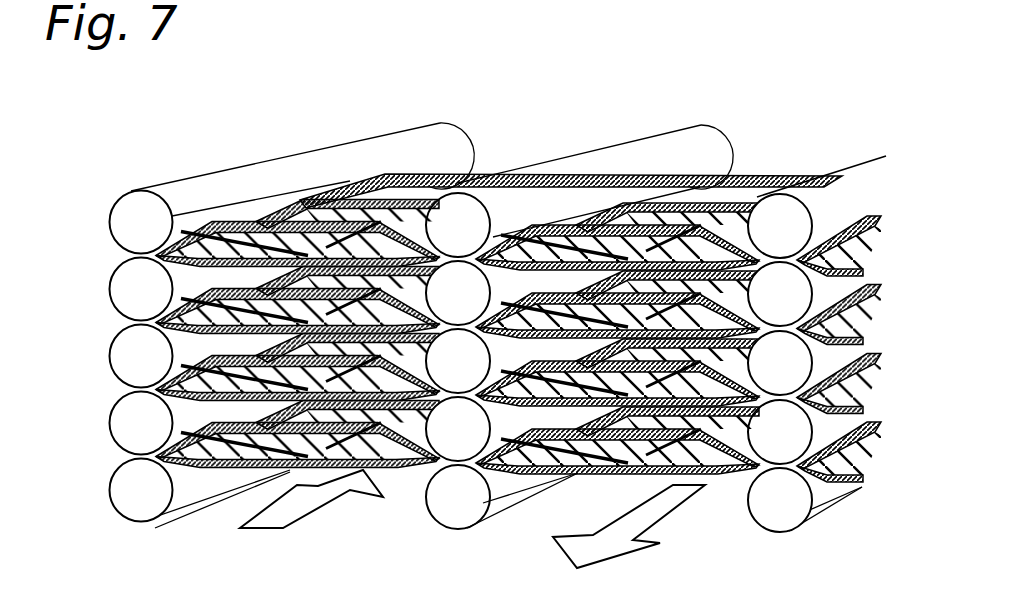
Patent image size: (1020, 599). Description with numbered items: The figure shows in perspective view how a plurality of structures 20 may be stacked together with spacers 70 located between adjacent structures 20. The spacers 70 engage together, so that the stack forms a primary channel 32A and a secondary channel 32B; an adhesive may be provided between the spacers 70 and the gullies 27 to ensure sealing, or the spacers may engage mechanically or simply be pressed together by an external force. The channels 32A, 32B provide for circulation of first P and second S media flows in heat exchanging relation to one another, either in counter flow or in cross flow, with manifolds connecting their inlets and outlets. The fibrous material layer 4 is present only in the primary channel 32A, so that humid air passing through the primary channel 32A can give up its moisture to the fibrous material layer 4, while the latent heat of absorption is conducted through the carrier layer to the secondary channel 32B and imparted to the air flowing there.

The fibrous material layer 4 is at (254, 224).
The structure 20 is at (120, 258).
The gully 27 is at (490, 448).
The primary channel 32A is at (499, 152).
The secondary channel 32B is at (767, 160).
The spacer 70 is at (111, 208).
The first media flow P is at (307, 510).
The second media flow S is at (642, 522).